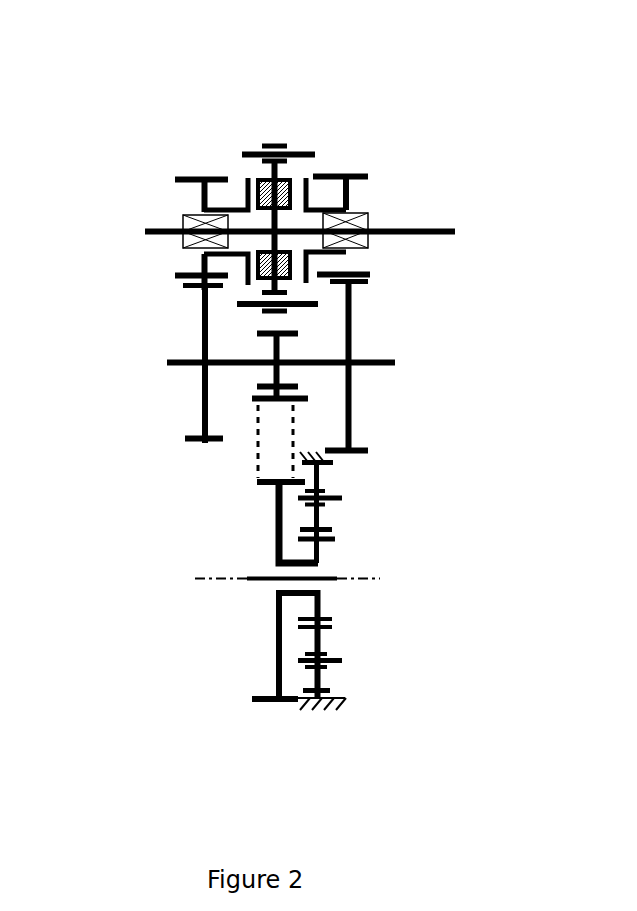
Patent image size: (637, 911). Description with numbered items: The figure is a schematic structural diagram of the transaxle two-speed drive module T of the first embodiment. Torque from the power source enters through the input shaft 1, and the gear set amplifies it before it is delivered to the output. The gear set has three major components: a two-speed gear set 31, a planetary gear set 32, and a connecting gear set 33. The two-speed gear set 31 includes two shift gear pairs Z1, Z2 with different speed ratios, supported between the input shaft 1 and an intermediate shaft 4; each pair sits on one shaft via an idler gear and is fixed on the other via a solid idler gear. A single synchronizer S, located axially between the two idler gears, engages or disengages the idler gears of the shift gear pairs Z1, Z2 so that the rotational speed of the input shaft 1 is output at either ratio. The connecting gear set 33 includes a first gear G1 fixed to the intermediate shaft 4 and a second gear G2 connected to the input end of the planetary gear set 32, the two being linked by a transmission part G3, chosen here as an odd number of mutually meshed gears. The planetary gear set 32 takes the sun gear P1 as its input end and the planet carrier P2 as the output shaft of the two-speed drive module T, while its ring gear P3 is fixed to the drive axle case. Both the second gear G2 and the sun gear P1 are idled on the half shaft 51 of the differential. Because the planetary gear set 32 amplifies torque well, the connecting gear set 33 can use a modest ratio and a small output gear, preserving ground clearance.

The two-speed drive module T is at (167, 100).
The input shaft 1 is at (162, 229).
The intermediate shaft 4 is at (168, 361).
The two-speed gear set 31 is at (457, 58).
The shift gear pair Z1 is at (215, 175).
The synchronizer S is at (294, 150).
The shift gear pair Z2 is at (352, 172).
The first gear G1 is at (257, 388).
The connecting gear set 33 is at (97, 435).
The transmission part G3 is at (257, 473).
The second gear G2 is at (276, 545).
The planetary gear set 32 is at (452, 412).
The ring gear P3 is at (320, 446).
The planet carrier P2 is at (334, 493).
The sun gear P1 is at (327, 552).
The half shaft 51 is at (330, 582).